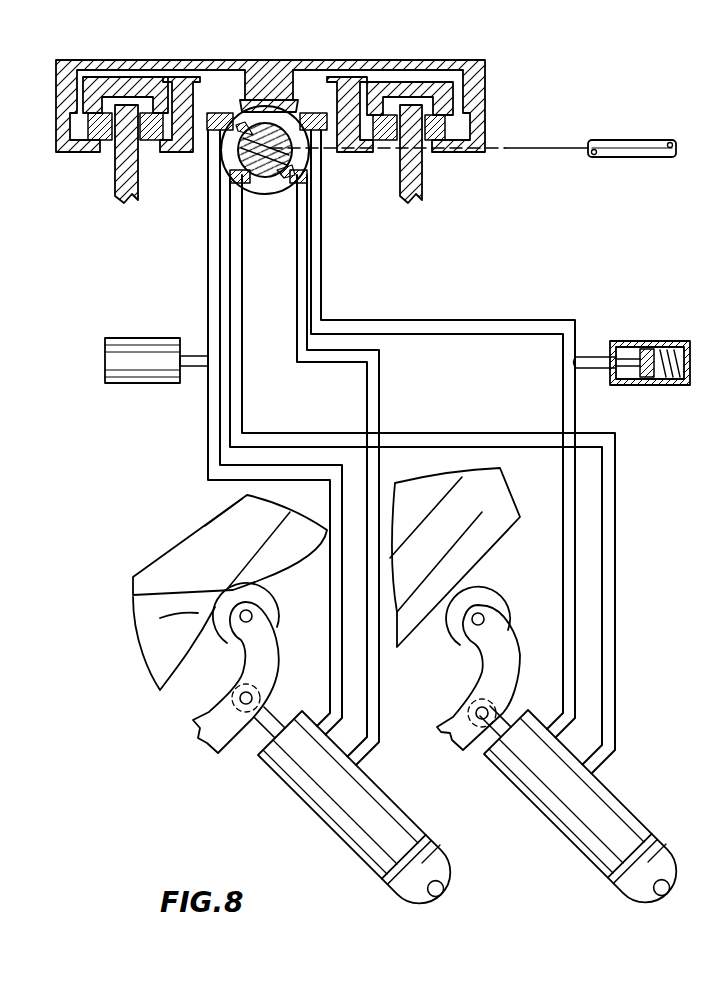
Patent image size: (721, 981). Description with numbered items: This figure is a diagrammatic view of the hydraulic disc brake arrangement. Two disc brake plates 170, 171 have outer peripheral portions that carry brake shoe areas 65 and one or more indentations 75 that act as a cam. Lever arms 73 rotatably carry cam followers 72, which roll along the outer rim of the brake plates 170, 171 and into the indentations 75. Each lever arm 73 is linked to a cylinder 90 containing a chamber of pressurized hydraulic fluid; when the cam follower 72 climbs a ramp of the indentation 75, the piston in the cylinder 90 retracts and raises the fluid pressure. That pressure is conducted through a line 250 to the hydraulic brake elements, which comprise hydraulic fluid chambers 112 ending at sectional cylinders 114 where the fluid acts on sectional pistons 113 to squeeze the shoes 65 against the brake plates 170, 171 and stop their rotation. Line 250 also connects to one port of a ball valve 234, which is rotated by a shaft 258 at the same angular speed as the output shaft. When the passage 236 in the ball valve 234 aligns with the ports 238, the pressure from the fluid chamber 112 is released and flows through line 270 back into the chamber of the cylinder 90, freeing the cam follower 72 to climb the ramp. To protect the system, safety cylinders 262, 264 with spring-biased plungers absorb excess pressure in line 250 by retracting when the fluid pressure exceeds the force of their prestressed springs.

The hydraulic fluid chamber 112 is at (168, 74).
The port 238 is at (238, 118).
The shaft 258 is at (627, 143).
The sectional cylinder 114 is at (82, 130).
The sectional piston 113 is at (102, 152).
The brake shoe area 65 is at (150, 142).
The brake plate 170 is at (124, 200).
The ball valve 234 is at (267, 172).
The passage 236 is at (291, 187).
The brake plate 171 is at (410, 195).
The safety cylinder 262 is at (130, 347).
The safety cylinder 264 is at (633, 341).
The line 270 is at (379, 393).
The line 250 is at (333, 596).
The indentation 75 is at (163, 630).
The cam follower 72 is at (228, 627).
The lever arm 73 is at (272, 657).
The cylinder 90 is at (390, 800).